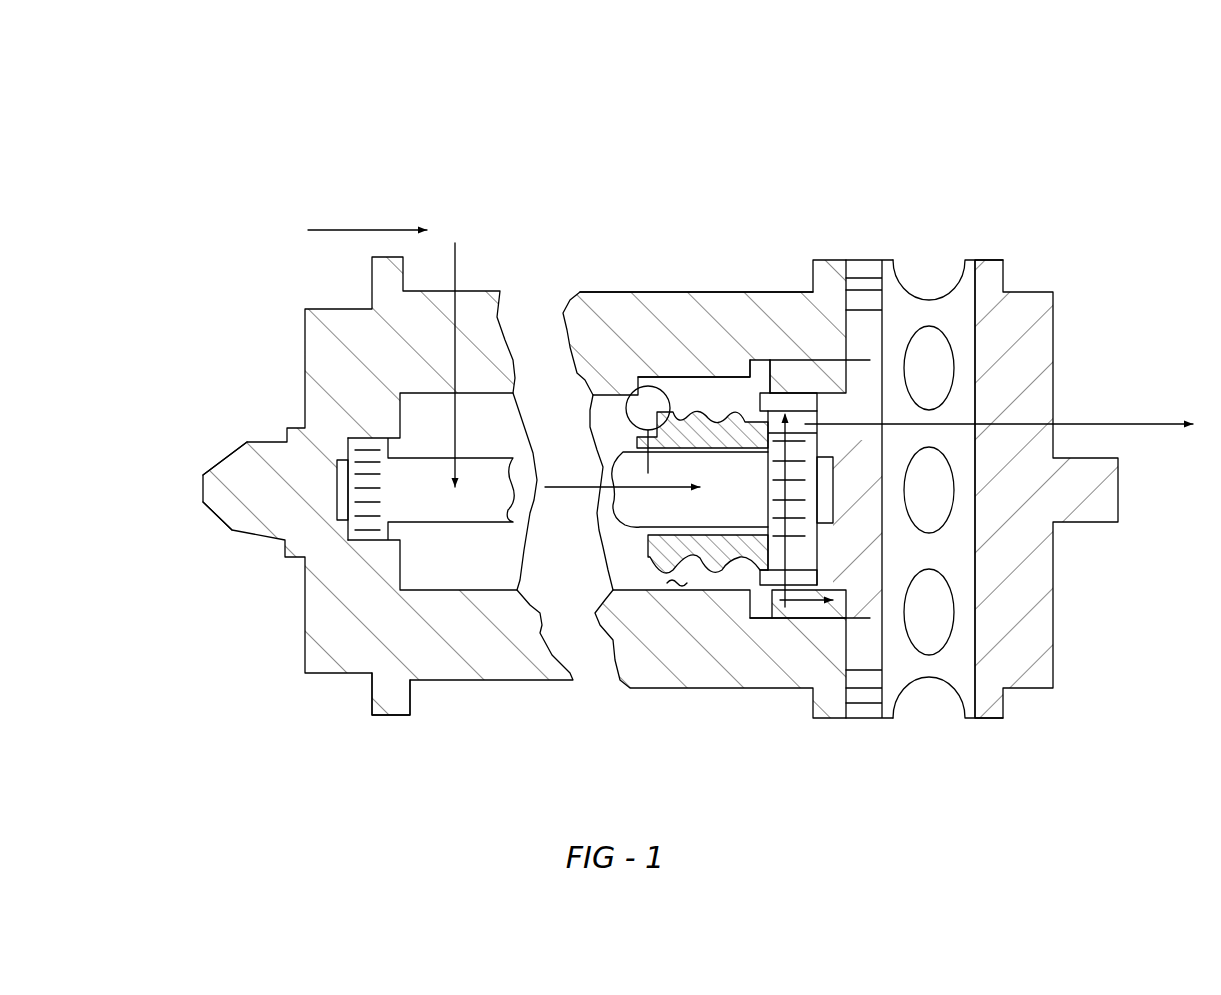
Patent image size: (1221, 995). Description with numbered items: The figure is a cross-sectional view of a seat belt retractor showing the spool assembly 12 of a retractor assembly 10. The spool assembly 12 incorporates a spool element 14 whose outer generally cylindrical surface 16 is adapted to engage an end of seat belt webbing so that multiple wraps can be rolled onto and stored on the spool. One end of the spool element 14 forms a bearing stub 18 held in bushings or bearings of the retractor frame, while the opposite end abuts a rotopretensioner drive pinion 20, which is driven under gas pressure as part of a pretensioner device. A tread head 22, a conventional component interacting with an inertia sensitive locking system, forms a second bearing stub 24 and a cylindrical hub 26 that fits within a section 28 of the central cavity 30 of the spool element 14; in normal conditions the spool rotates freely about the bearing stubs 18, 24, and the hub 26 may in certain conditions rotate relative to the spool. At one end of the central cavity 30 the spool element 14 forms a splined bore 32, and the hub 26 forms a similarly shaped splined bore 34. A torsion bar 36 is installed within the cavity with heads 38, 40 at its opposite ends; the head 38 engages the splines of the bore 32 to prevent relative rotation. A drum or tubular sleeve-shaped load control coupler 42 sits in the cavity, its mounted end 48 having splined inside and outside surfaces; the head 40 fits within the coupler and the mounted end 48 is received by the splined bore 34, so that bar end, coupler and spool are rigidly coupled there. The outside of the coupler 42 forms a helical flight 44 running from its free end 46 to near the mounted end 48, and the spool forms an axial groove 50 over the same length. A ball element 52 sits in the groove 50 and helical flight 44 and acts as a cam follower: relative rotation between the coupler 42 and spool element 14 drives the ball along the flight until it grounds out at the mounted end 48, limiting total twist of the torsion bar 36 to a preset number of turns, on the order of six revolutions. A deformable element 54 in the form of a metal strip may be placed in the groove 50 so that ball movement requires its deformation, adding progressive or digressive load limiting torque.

The retractor assembly 10 is at (869, 424).
The spool assembly 12 is at (866, 208).
The spool element 14 is at (380, 278).
The outer generally cylindrical surface 16 is at (788, 292).
The bearing stub 18 is at (200, 495).
The rotopretensioner drive pinion 20 is at (914, 286).
The tread head 22 is at (833, 720).
The second bearing stub 24 is at (1084, 500).
The cylindrical hub 26 is at (833, 622).
The section 28 is at (677, 590).
The central cavity 30 is at (428, 592).
The splined bore 32 is at (360, 545).
The splined bore 34 is at (817, 580).
The torsion bar 36 is at (475, 525).
The head 38 is at (360, 515).
The head 40 is at (800, 415).
The load control coupler 42 is at (703, 555).
The helical flight 44 is at (747, 422).
The free end 46 is at (667, 545).
The mounted end 48 is at (806, 415).
The axial groove 50 is at (737, 383).
The ball element 52 is at (648, 404).
The deformable element 54 is at (748, 378).